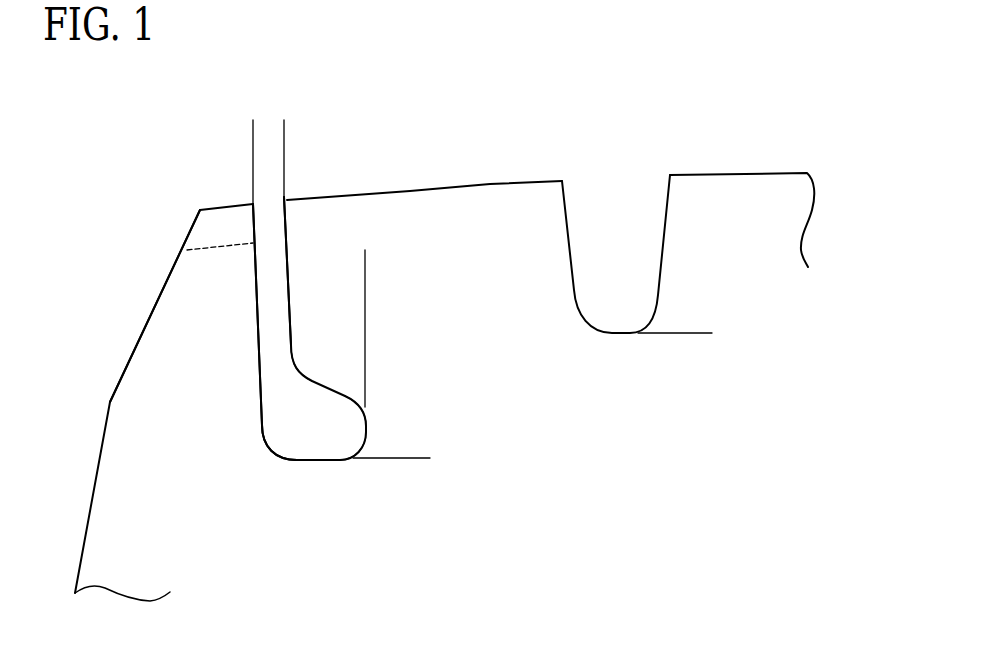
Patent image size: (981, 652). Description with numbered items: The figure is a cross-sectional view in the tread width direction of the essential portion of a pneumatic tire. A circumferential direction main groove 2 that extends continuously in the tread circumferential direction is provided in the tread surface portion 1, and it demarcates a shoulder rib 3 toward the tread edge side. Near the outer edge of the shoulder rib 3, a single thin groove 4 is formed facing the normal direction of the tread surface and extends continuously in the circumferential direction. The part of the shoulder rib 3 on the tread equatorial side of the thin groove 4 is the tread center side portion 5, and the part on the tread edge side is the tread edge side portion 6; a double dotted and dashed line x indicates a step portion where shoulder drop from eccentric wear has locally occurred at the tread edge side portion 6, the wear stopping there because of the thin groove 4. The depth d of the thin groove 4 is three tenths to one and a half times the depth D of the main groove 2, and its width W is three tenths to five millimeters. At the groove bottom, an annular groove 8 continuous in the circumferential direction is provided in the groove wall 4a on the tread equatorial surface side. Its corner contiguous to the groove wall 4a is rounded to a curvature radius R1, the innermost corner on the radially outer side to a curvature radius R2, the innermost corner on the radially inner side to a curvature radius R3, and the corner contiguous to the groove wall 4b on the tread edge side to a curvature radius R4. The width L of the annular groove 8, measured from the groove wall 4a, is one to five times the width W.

The tread surface portion 1 is at (758, 117).
The circumferential direction main groove 2 is at (571, 212).
The shoulder rib 3 is at (449, 124).
The thin groove 4 is at (272, 215).
The groove wall on tread equatorial surface side 4a is at (286, 321).
The groove wall on tread edge side 4b is at (266, 336).
The tread center side portion of shoulder rib 5 is at (493, 203).
The tread edge side portion of shoulder rib 6 is at (178, 311).
The annular groove 8 is at (296, 452).
The step portion x is at (227, 243).
The width of thin groove W is at (320, 128).
The width of annular groove L is at (365, 260).
The depth of thin groove d is at (408, 190).
The depth of circumferential direction main groove D is at (702, 175).
The curvature radius R1 is at (302, 360).
The curvature radius R2 is at (357, 407).
The curvature radius R3 is at (358, 447).
The curvature radius R4 is at (300, 424).